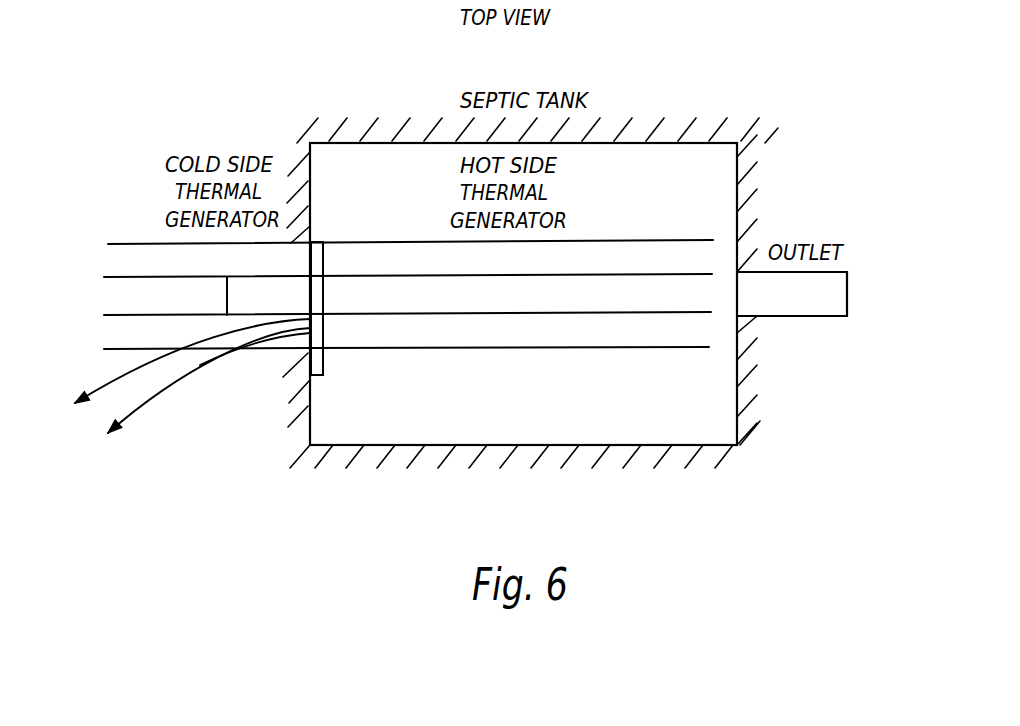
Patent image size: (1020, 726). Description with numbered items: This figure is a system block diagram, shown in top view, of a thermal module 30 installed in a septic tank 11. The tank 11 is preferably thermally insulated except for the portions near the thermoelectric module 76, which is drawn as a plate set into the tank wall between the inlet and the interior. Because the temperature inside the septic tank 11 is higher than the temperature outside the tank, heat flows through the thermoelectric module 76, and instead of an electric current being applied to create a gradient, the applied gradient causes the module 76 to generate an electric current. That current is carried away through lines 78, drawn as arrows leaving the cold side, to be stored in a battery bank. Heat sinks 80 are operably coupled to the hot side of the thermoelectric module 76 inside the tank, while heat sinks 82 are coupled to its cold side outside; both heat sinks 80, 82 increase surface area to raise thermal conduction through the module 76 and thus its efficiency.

The septic tank 11 is at (632, 446).
The thermal module 30 is at (322, 220).
The thermoelectric module 76 is at (307, 358).
The lines 78 is at (108, 380).
The heat sinks 80 is at (442, 350).
The heat sinks 82 is at (108, 348).